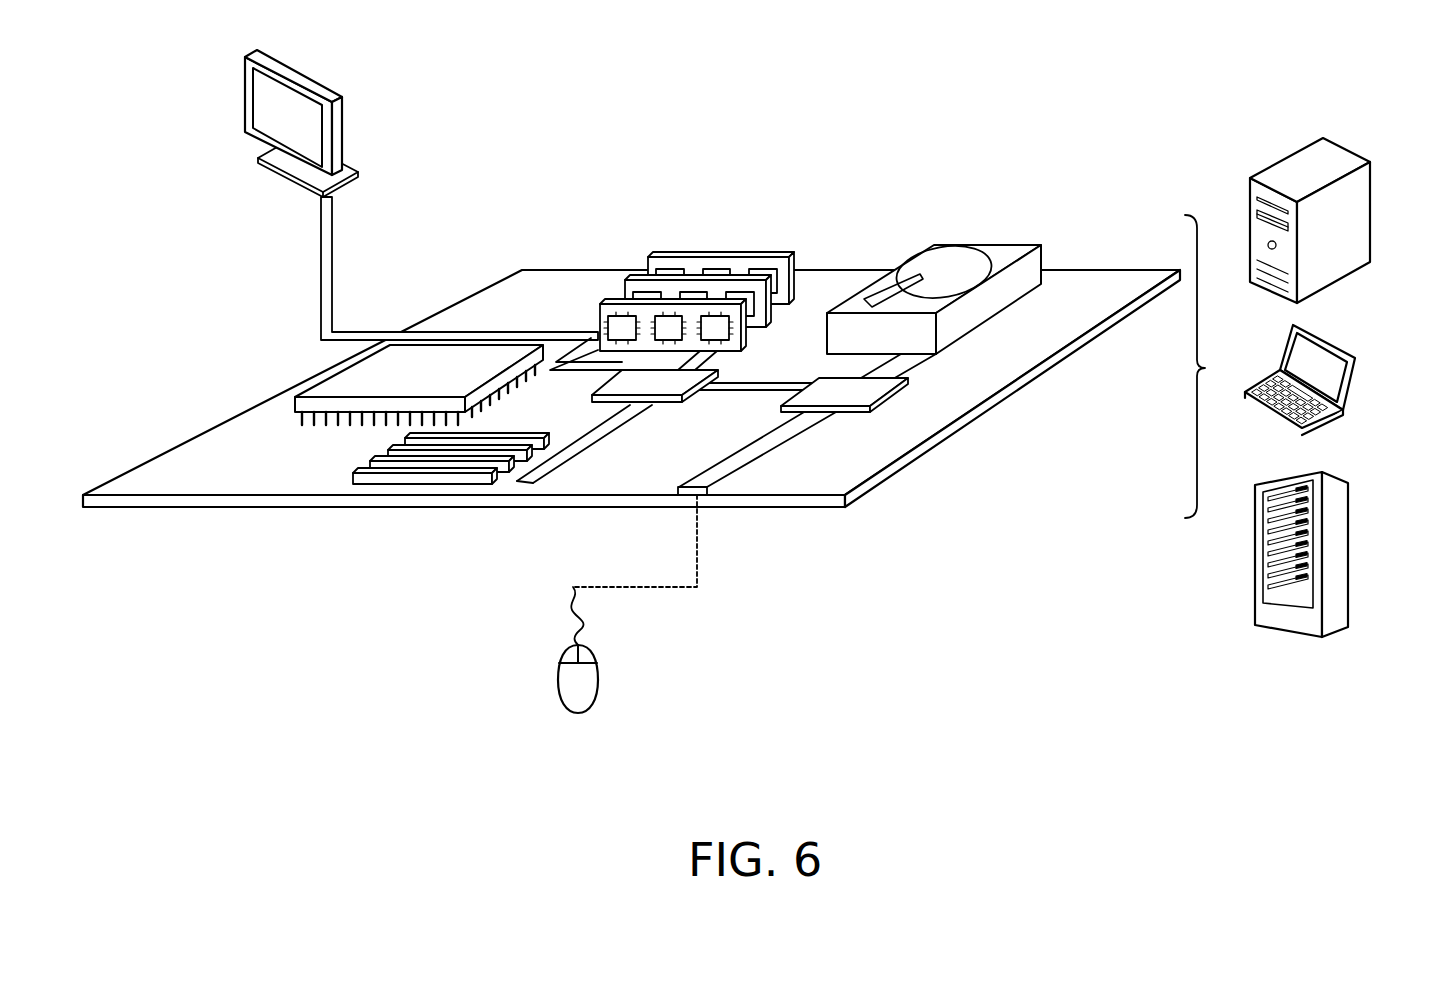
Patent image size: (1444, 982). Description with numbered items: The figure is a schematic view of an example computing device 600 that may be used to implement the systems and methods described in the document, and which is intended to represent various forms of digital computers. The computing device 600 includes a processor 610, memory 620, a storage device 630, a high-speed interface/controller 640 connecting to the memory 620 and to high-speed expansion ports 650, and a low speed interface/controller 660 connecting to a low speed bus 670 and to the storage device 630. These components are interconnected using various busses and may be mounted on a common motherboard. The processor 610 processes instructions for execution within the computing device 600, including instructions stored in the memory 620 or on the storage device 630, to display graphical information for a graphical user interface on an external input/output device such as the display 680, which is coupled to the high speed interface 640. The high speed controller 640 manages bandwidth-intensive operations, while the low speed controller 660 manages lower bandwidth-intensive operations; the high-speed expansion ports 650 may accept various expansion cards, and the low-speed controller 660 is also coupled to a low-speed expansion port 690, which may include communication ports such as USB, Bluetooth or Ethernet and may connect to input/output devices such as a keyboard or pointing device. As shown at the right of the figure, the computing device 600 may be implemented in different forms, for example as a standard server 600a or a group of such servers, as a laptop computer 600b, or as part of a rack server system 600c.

The computing device 600 is at (797, 120).
The standard server 600a is at (1281, 160).
The laptop computer 600b is at (1367, 341).
The rack server system 600c is at (1345, 533).
The processor 610 is at (293, 397).
The memory 620 is at (713, 259).
The storage device 630 is at (982, 245).
The high-speed interface/controller 640 is at (660, 403).
The high-speed expansion ports 650 is at (353, 470).
The low speed interface/controller 660 is at (833, 388).
The low speed bus 670 is at (784, 449).
The display 680 is at (244, 101).
The low-speed expansion port 690 is at (708, 497).